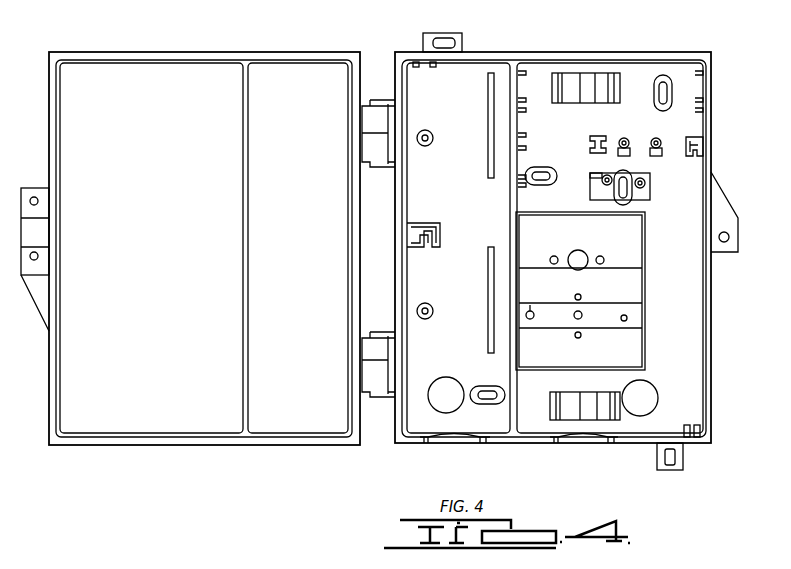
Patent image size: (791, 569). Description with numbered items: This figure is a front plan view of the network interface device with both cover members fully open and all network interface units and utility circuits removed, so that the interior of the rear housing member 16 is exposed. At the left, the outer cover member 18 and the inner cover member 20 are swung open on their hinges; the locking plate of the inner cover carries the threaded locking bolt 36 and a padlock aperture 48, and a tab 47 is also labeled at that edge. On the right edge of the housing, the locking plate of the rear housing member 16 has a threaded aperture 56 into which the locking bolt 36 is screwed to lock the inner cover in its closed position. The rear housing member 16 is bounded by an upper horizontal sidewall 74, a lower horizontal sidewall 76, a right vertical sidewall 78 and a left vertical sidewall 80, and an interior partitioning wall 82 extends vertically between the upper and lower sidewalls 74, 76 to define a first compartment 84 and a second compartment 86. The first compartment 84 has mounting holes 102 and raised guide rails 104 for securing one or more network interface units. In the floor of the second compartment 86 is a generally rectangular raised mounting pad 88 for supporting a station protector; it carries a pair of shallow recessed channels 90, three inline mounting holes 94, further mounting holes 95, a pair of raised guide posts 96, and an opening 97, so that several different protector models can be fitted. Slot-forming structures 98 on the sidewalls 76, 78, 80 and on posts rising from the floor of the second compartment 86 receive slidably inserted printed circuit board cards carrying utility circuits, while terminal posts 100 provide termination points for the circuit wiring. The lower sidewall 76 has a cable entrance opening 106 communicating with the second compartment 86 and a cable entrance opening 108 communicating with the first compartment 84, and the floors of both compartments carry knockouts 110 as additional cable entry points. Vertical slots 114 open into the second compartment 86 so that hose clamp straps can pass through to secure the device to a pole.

The rear housing member 16 is at (545, 58).
The outer cover member 18 is at (310, 264).
The inner cover member 20 is at (163, 264).
The threaded locking bolt 36 is at (38, 201).
The mounting tab 47 is at (40, 229).
The padlock aperture 48 is at (38, 260).
The threaded aperture 56 is at (724, 232).
The upper horizontal sidewall 74 is at (494, 50).
The lower horizontal sidewall 76 is at (632, 448).
The right vertical sidewall 78 is at (712, 310).
The left vertical sidewall 80 is at (398, 188).
The interior partitioning wall 82 is at (513, 226).
The first compartment 84 is at (452, 272).
The second compartment 86 is at (668, 250).
The raised mounting pad 88 is at (634, 342).
The recessed channels 90 is at (630, 286).
The mounting holes 94 is at (623, 322).
The mounting holes 95 is at (574, 337).
The raised guide posts 96 is at (556, 264).
The terminal opening 97 is at (580, 261).
The slot-forming structures 98 is at (700, 472).
The terminal posts 100 is at (632, 150).
The mounting holes 102 is at (433, 138).
The raised guide rails 104 is at (488, 88).
The cable entrance opening 106 is at (577, 449).
The cable entrance opening 108 is at (425, 449).
The knockouts 110 is at (445, 378).
The vertical slots 114 is at (612, 73).